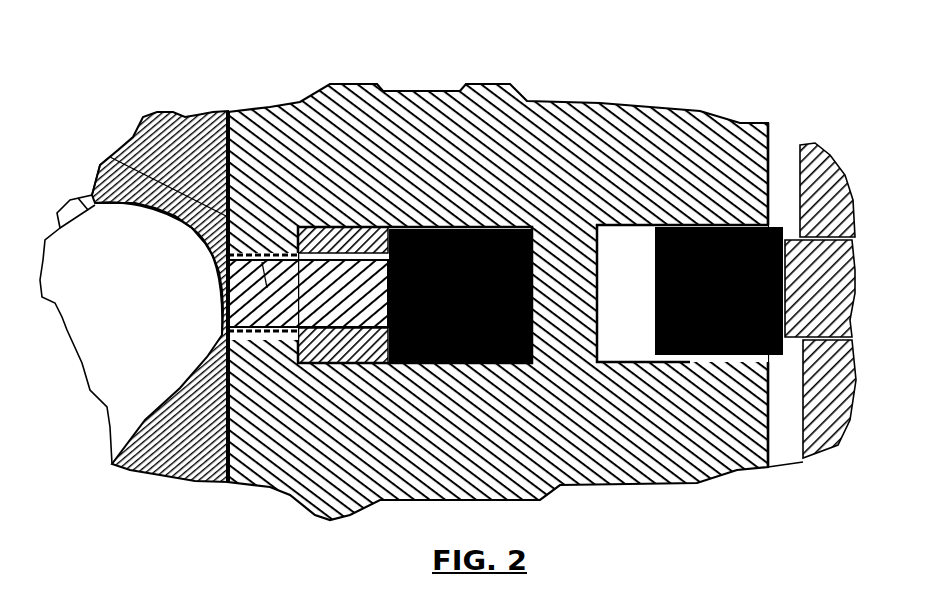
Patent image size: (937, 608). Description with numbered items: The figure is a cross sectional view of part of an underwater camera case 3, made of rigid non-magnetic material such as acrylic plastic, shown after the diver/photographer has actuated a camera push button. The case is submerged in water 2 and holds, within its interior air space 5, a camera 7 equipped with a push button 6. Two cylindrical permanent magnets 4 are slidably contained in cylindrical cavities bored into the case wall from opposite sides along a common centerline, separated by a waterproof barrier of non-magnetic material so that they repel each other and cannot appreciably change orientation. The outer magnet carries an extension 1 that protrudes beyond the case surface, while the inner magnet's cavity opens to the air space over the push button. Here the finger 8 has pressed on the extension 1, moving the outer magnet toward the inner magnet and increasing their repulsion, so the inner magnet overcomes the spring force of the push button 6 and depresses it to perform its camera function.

The extension 1 is at (110, 155).
The water 2 is at (192, 132).
The underwater camera case 3 is at (278, 120).
The cylindrical permanent magnets 4 is at (447, 220).
The air space 5 is at (788, 141).
The push button 6 is at (790, 222).
The camera 7 is at (840, 180).
The finger 8 is at (134, 236).